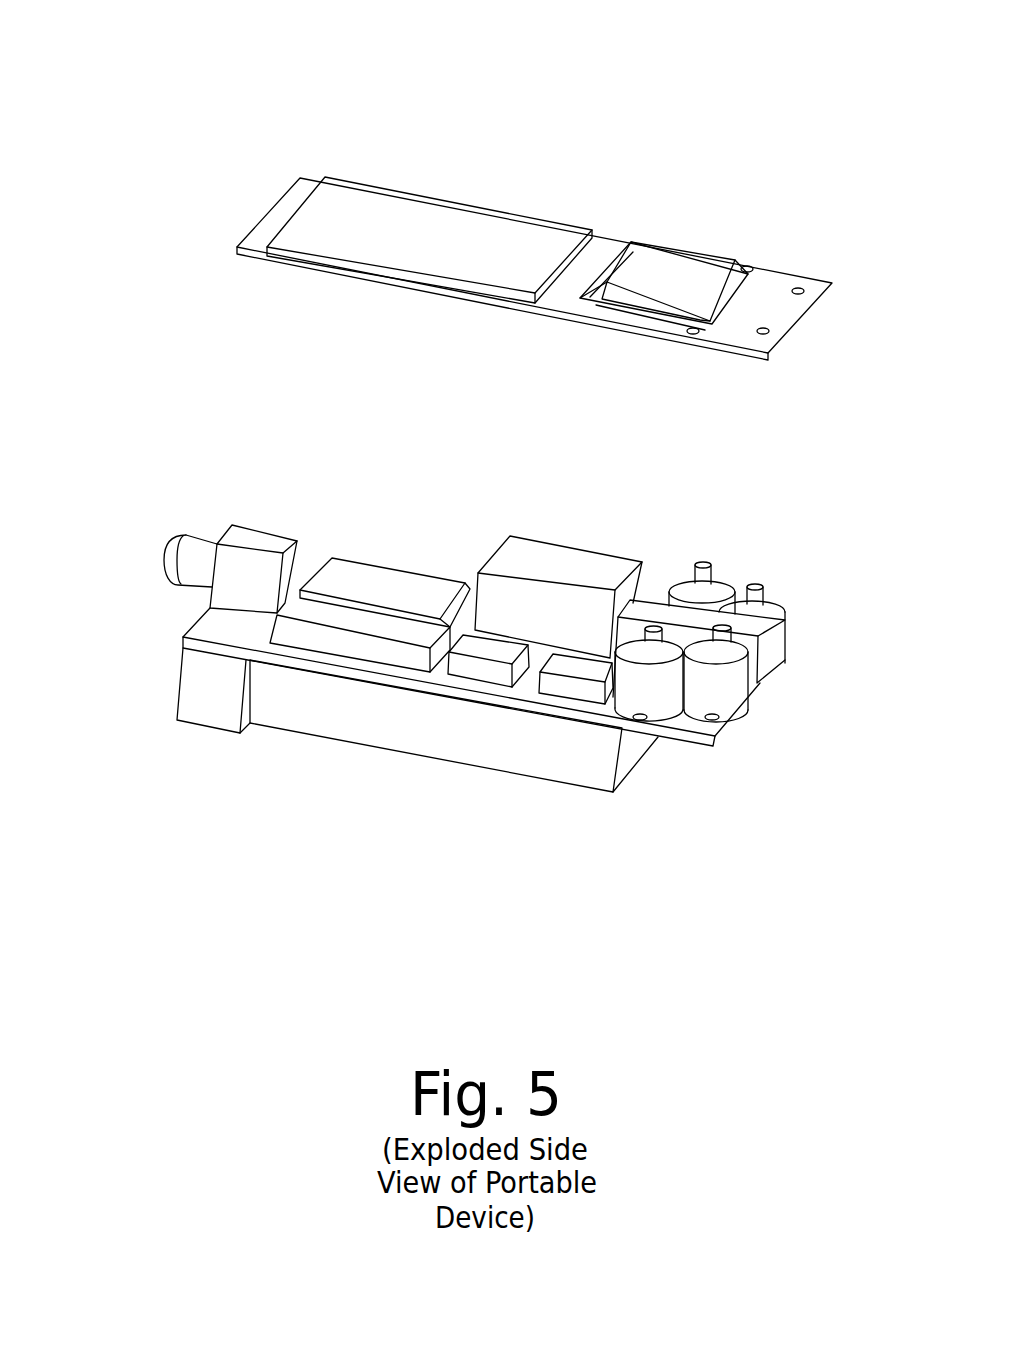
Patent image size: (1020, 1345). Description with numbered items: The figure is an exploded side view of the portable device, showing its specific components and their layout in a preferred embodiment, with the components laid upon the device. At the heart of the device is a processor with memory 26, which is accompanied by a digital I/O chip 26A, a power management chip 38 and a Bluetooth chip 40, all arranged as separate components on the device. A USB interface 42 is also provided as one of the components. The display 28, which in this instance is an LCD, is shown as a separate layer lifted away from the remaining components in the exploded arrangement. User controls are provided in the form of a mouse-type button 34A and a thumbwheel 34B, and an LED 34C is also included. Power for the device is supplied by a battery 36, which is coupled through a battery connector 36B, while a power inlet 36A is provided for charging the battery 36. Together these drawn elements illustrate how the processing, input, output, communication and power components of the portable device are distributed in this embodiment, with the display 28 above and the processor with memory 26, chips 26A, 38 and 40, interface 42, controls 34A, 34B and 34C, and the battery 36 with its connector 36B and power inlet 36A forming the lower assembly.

The processor with memory 26 is at (388, 587).
The digital I/O chip 26A is at (577, 668).
The display 28 is at (437, 232).
The button 34A is at (670, 270).
The thumbwheel 34B is at (778, 612).
The LED 34C is at (163, 553).
The battery 36 is at (453, 728).
The power inlet 36A is at (760, 647).
The battery connector 36B is at (220, 687).
The power management chip 38 is at (487, 647).
The Bluetooth chip 40 is at (322, 615).
The USB interface 42 is at (585, 570).